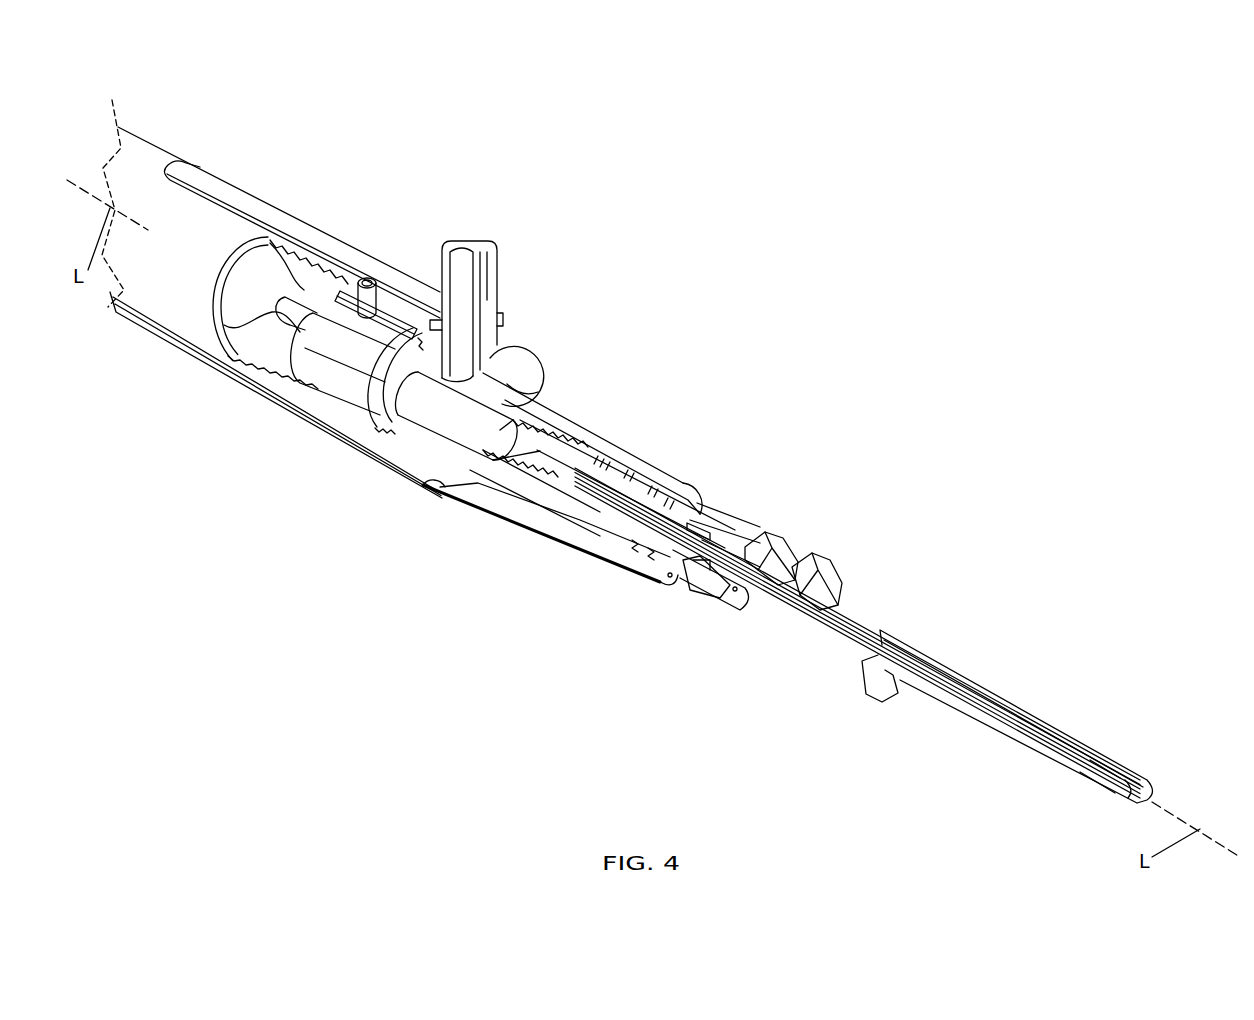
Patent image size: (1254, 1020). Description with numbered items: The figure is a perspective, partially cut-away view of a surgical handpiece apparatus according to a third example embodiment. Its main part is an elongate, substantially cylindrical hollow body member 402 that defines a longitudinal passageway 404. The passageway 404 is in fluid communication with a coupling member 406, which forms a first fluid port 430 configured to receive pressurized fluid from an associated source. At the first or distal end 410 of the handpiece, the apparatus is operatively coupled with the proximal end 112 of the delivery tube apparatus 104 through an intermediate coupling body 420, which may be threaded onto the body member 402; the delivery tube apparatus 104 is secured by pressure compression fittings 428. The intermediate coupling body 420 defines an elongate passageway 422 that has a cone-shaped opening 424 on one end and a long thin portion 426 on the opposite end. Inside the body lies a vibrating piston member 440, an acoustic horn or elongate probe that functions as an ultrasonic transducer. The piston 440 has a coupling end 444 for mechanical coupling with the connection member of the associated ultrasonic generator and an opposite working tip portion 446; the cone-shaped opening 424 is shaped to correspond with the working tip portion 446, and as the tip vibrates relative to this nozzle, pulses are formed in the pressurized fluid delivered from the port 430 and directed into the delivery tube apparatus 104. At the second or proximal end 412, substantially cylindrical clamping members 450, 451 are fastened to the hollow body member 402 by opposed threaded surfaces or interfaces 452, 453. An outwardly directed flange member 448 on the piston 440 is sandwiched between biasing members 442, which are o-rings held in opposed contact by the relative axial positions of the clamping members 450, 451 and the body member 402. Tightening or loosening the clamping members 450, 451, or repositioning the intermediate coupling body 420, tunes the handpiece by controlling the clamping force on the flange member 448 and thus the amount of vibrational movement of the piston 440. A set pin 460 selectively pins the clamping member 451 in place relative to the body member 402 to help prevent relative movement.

The delivery tube apparatus 104 is at (843, 620).
The proximal end of the delivery tube apparatus 112 is at (827, 640).
The hollow body member 402 is at (523, 363).
The longitudinal passageway 404 is at (514, 407).
The coupling member 406 is at (493, 277).
The first or distal end 410 is at (843, 453).
The second or proximal end 412 is at (147, 136).
The intermediate coupling body 420 is at (653, 502).
The elongate passageway 422 is at (575, 473).
The cone-shaped opening 424 is at (553, 450).
The long thin portion 426 is at (587, 487).
The pressure compression fittings 428 is at (800, 555).
The first fluid port 430 is at (505, 218).
The vibrating piston member 440 is at (427, 397).
The biasing members 442 is at (407, 328).
The coupling end 444 is at (333, 350).
The working tip portion 446 is at (540, 455).
The flange member 448 is at (340, 347).
The cylindrical clamping member 450 is at (300, 375).
The cylindrical clamping member 451 is at (360, 352).
The threaded surface or interface 452 is at (308, 398).
The threaded surface or interface 453 is at (390, 322).
The set pin 460 is at (368, 297).